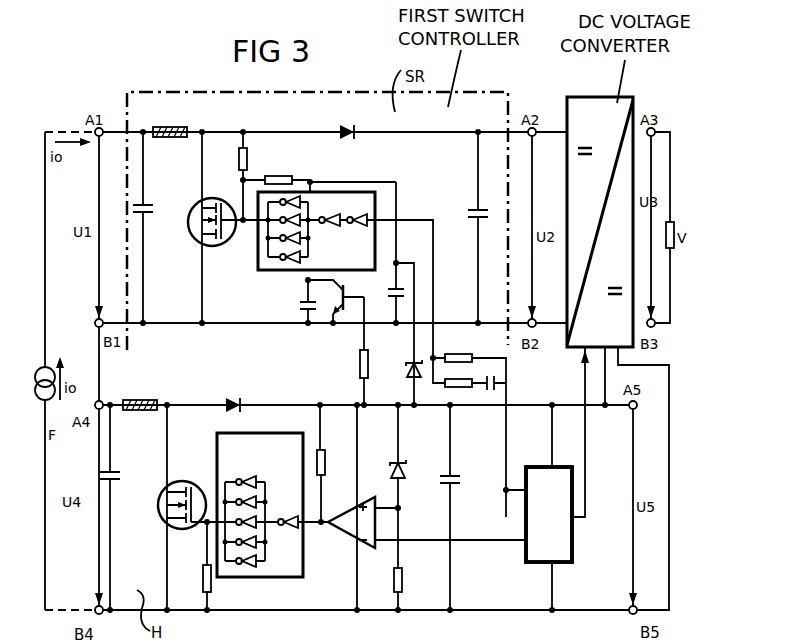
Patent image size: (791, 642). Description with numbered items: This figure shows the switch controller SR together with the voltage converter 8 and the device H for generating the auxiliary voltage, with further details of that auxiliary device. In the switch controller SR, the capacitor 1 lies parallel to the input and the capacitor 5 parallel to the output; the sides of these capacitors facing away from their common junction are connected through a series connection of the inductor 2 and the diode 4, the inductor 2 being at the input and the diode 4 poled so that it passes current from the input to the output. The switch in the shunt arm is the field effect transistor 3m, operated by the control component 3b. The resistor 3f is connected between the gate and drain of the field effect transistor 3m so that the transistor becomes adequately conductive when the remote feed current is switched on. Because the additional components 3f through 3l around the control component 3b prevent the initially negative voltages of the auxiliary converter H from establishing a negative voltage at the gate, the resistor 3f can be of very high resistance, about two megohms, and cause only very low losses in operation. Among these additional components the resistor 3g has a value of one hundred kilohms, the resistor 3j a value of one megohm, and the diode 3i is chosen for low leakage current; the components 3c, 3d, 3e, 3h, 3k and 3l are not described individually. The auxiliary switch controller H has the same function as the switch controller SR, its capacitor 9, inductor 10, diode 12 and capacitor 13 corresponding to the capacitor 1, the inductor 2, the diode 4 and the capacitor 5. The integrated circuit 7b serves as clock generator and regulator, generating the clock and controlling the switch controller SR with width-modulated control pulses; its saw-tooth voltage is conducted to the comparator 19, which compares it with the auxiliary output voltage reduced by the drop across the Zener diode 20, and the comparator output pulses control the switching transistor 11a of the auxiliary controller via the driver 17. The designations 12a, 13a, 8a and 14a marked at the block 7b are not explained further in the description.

The capacitor 1 is at (148, 227).
The inductor 2 is at (176, 125).
The control component 3b is at (351, 200).
The capacitor 3c is at (296, 301).
The transistor 3d is at (350, 294).
The resistor 3e is at (351, 351).
The resistor 3f is at (232, 176).
The resistor 3g is at (292, 168).
The additional component 3h is at (402, 286).
The diode 3i is at (403, 334).
The resistor 3j is at (447, 351).
The additional component 3k is at (460, 388).
The additional component 3l is at (496, 393).
The field effect transistor 3m is at (190, 241).
The diode 4 is at (356, 111).
The capacitor 5 is at (471, 227).
The voltage converter 8 is at (594, 98).
The capacitor 9 is at (112, 507).
The inductor 10 is at (145, 383).
The diode 12 is at (232, 393).
The capacitor 13 is at (456, 507).
The driver 17 is at (267, 505).
The comparator 19 is at (349, 506).
The Zener diode 20 is at (392, 507).
The integrated circuit 7b is at (558, 466).
The switching transistor (MOSFET) 11a is at (158, 500).
The control circuit element 12a is at (549, 514).
The control circuit element 13a is at (549, 514).
The control circuit element 8a is at (548, 548).
The control circuit element 14a is at (548, 548).